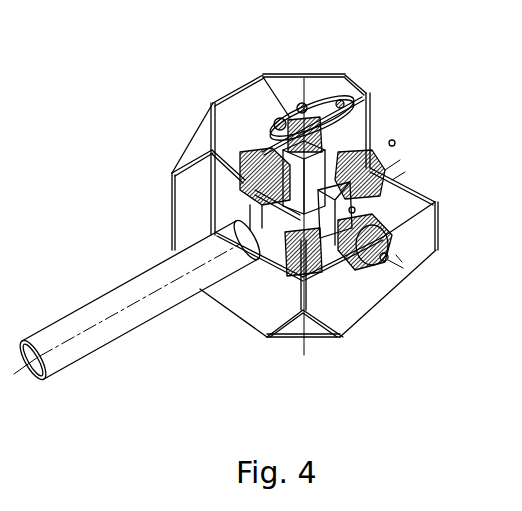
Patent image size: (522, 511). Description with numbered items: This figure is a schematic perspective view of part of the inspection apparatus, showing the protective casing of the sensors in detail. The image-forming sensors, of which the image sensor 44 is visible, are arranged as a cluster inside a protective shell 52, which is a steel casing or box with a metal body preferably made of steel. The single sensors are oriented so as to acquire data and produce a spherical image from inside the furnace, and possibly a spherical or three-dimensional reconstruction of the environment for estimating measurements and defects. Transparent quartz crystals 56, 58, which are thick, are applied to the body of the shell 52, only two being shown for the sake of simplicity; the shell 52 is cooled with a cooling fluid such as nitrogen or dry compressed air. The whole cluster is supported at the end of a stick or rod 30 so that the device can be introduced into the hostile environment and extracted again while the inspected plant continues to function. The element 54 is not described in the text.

The rod 30 is at (77, 310).
The image sensor 44 is at (363, 165).
The protective shell 52 is at (195, 200).
The frame panel 54 is at (247, 108).
The quartz crystal 56 is at (288, 118).
The quartz crystal 58 is at (373, 267).